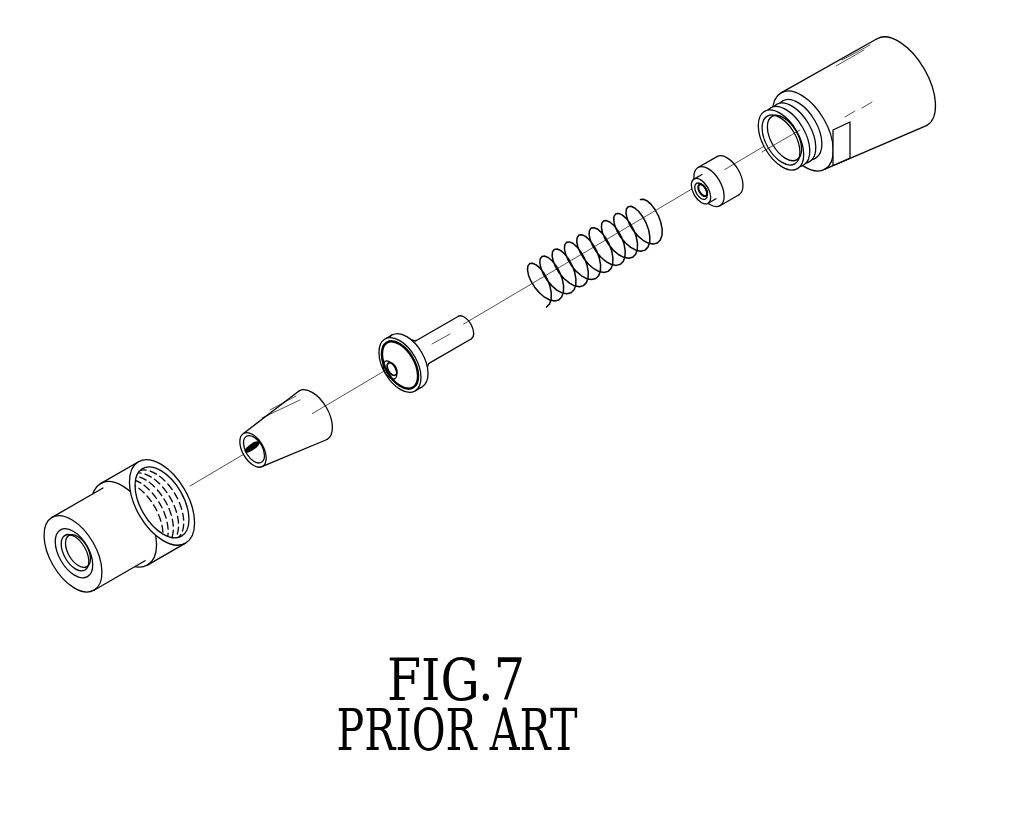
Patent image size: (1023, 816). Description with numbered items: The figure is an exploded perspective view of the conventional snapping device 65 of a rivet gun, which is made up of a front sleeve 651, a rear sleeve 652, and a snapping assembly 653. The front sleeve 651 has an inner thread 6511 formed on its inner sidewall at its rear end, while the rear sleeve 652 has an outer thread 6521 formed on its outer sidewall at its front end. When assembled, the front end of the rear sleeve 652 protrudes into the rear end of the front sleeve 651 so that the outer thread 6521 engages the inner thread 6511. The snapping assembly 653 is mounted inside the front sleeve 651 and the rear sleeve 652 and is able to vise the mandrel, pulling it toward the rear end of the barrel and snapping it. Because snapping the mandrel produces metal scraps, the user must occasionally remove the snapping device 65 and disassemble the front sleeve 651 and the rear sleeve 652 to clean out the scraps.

The conventional snapping device 65 is at (756, 36).
The front sleeve 651 is at (157, 547).
The inner thread 6511 is at (180, 531).
The rear sleeve 652 is at (888, 125).
The outer thread 6521 is at (732, 147).
The snapping assembly 653 is at (572, 361).